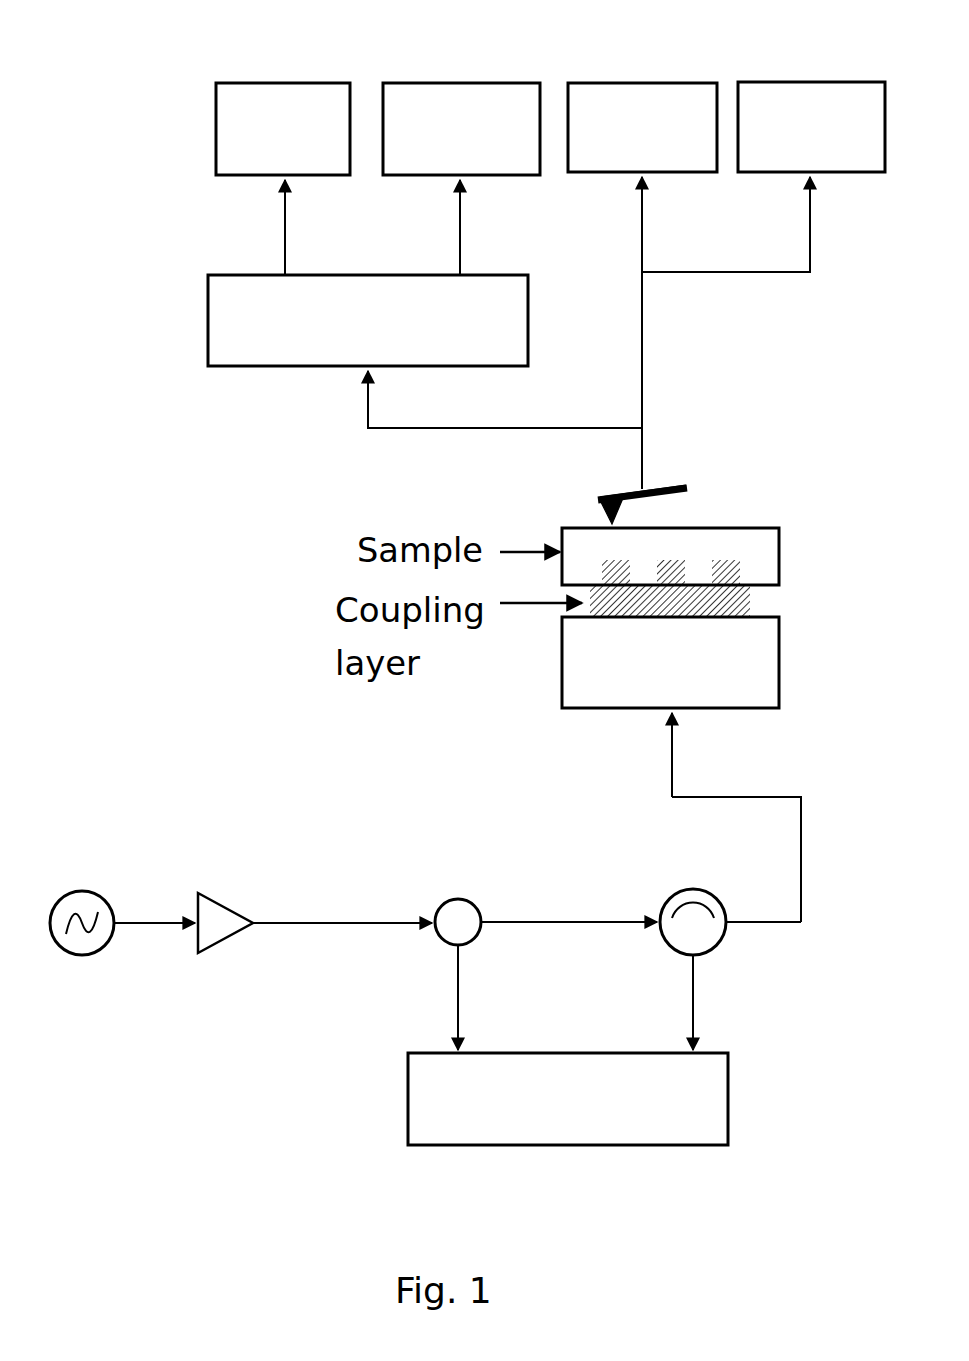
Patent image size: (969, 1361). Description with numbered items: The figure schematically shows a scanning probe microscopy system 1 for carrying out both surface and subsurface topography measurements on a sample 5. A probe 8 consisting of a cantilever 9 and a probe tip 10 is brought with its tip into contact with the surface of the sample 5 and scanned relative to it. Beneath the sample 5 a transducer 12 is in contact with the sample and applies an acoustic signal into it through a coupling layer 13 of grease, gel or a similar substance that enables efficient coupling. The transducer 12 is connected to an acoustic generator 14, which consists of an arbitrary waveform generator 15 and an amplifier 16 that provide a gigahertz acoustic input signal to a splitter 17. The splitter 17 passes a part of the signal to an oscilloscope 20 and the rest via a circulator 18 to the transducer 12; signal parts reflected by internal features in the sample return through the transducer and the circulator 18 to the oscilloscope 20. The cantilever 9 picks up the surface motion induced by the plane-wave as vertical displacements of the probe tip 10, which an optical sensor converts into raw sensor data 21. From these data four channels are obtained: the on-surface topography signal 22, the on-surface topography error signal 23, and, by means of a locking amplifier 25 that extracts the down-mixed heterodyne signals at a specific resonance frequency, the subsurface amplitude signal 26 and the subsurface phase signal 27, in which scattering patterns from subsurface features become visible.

The system 1 is at (108, 468).
The sample 5 is at (781, 555).
The probe 8 is at (674, 486).
The cantilever 9 is at (657, 497).
The probe tip 10 is at (603, 518).
The transducer 12 is at (781, 660).
The coupling layer 13 is at (750, 603).
The acoustic generator 14 is at (293, 1115).
The arbitrary waveform generator 15 is at (92, 955).
The amplifier 16 is at (222, 942).
The splitter 17 is at (475, 940).
The circulator 18 is at (713, 946).
The oscilloscope 20 is at (729, 1097).
The raw sensor data 21 is at (643, 443).
The on-surface topography signal 22 is at (640, 82).
The on-surface topography error signal 23 is at (806, 82).
The locking amplifier 25 is at (207, 322).
The subsurface amplitude signal 26 is at (277, 82).
The subsurface phase signal 27 is at (452, 82).